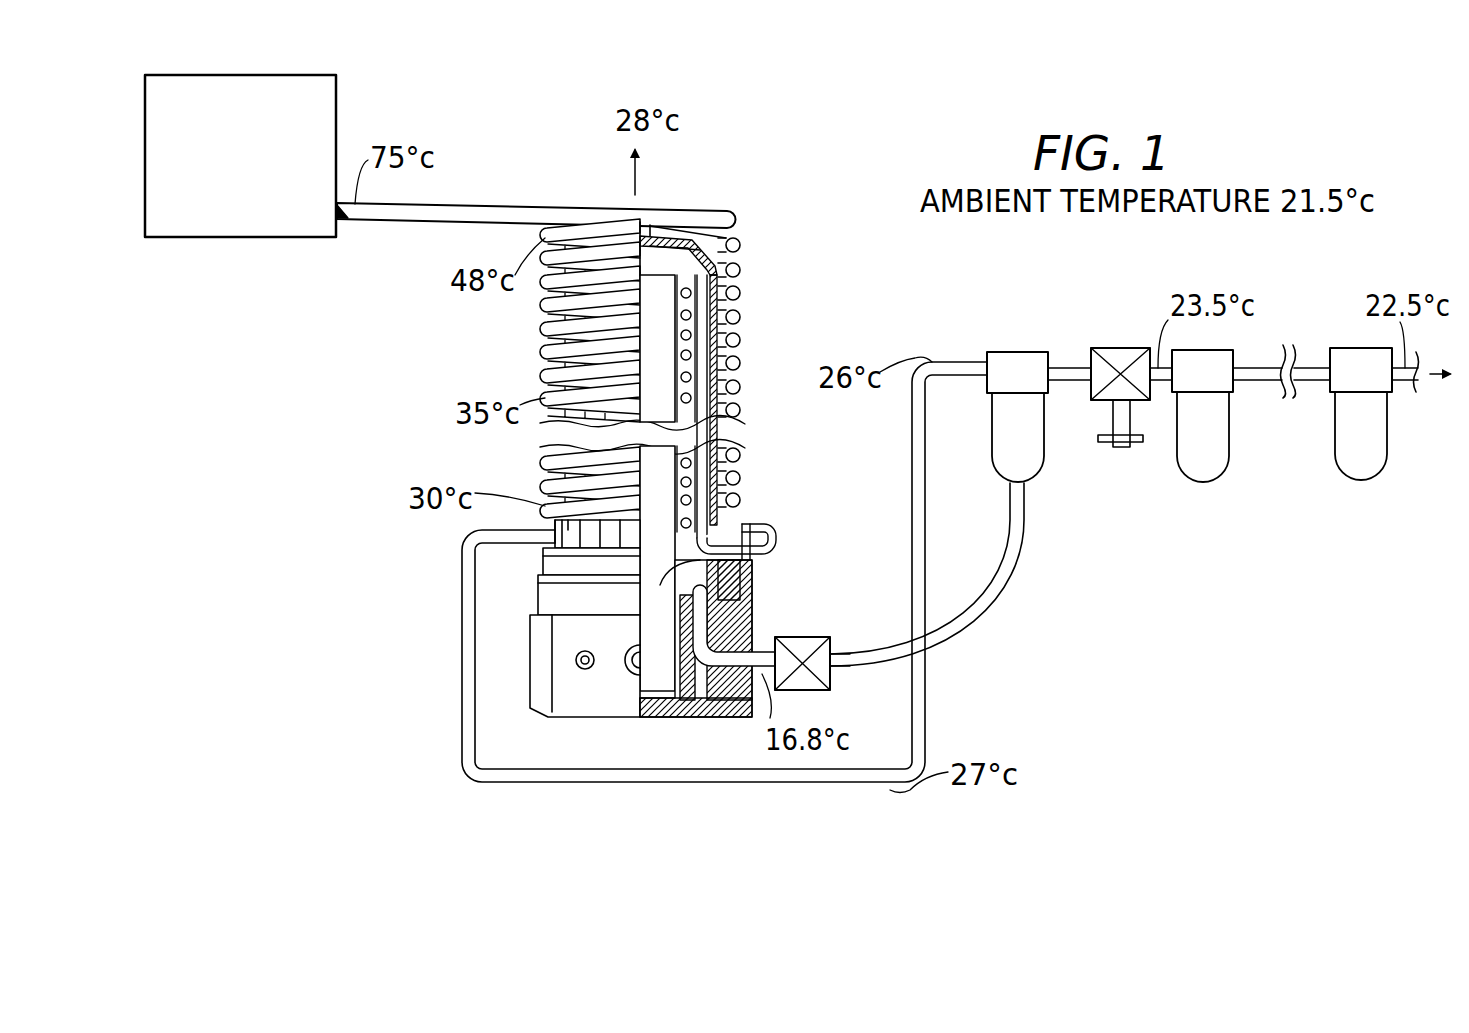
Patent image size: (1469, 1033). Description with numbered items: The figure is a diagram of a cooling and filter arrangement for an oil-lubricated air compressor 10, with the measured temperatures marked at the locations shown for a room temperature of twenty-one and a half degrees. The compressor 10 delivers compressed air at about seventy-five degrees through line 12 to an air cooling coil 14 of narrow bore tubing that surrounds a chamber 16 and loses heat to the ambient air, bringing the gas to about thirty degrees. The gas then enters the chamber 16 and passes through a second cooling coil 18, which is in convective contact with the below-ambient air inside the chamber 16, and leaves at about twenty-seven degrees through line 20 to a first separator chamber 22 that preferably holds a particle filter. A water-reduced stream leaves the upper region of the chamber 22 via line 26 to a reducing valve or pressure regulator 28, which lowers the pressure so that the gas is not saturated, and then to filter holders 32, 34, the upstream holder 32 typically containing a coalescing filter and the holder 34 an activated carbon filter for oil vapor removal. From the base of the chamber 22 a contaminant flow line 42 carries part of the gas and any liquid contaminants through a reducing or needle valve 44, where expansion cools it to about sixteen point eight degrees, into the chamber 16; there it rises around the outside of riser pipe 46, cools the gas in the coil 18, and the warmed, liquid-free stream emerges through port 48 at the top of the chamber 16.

The oil-lubricated air compressor 10 is at (249, 183).
The line 12 is at (465, 204).
The air cooling coil 14 is at (540, 374).
The chamber 16 is at (536, 567).
The second cooling coil 18 is at (693, 316).
The line 20 is at (478, 790).
The first separator chamber 22 is at (990, 358).
The line 26 is at (1072, 368).
The reducing valve or pressure regulator 28 is at (1125, 348).
The upstream filter holder 32 is at (1232, 452).
The filter holder 34 is at (1340, 348).
The contaminant flow line 42 is at (1013, 563).
The reducing or needle valve 44 is at (832, 690).
The riser pipe 46 is at (737, 572).
The port 48 is at (650, 238).